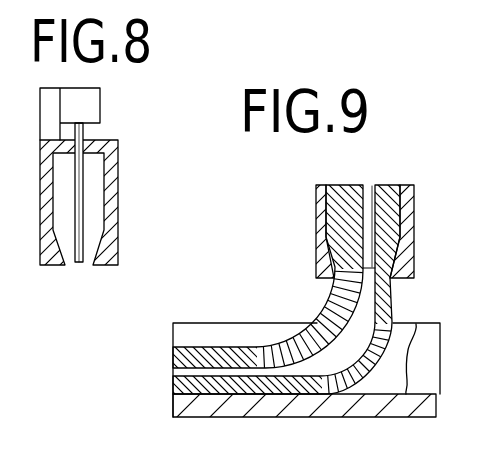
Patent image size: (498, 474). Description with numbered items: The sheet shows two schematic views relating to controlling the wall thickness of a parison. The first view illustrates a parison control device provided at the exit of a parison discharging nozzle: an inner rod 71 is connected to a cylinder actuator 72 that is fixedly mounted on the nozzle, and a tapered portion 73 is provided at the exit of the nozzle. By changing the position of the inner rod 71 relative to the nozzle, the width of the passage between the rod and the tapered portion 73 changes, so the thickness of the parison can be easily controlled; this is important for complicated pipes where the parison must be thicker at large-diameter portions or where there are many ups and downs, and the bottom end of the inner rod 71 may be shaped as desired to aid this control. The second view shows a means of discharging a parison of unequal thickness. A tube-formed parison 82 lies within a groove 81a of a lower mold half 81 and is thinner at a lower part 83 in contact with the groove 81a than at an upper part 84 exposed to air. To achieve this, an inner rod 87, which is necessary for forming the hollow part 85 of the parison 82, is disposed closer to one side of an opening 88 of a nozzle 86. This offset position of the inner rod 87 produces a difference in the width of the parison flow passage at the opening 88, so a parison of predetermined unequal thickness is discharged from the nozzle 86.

In FIG. 8, the inner rod 71 is at (82, 183).
In FIG. 8, the cylinder actuator 72 is at (93, 104).
In FIG. 8, the tapered portion 73 is at (55, 255).
In FIG. 9, the lower mold half 81 is at (235, 321).
In FIG. 9, the groove 81a is at (416, 324).
In FIG. 9, the tube-formed parison 82 is at (279, 276).
In FIG. 9, the lower part of parison 83 is at (174, 385).
In FIG. 9, the upper part of parison 84 is at (200, 360).
In FIG. 9, the hollow part 85 is at (272, 375).
In FIG. 9, the nozzle 86 is at (317, 199).
In FIG. 9, the inner rod 87 is at (368, 190).
In FIG. 9, the opening 88 is at (396, 283).